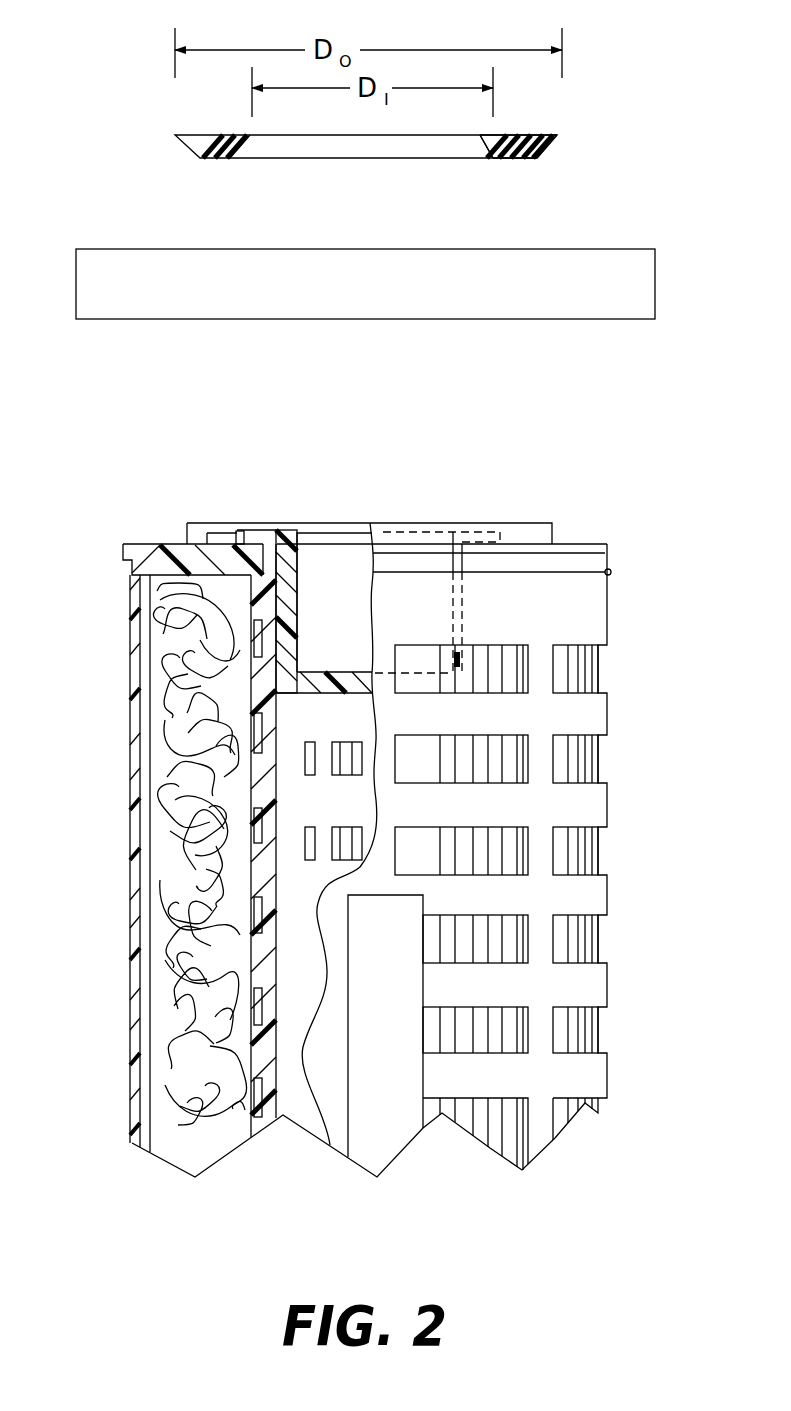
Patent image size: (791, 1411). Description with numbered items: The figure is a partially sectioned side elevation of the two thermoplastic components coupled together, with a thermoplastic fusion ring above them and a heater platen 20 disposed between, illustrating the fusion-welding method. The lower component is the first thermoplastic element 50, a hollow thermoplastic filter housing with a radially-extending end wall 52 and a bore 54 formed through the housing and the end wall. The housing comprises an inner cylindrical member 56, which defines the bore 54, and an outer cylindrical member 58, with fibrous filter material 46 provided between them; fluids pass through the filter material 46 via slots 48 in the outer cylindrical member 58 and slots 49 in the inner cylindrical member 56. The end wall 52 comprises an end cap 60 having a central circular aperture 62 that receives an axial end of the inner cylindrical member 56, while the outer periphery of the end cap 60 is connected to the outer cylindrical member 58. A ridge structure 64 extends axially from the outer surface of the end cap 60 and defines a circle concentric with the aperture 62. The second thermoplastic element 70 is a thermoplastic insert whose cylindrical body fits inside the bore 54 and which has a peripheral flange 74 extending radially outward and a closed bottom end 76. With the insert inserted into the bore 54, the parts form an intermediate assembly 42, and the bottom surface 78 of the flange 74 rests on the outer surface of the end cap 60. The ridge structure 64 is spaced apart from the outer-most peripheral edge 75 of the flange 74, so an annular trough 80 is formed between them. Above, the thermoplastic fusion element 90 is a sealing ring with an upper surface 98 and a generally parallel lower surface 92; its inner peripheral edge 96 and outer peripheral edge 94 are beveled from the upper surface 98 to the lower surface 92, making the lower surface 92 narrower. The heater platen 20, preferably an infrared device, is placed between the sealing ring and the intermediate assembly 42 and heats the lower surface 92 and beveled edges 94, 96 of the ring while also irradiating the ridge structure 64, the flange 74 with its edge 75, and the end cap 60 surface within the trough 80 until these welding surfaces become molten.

The heater platen 20 is at (660, 248).
The intermediate assembly 42 is at (627, 430).
The fibrous filter material 46 is at (182, 928).
The slots 48 is at (418, 773).
The slots 49 is at (343, 740).
The first thermoplastic element 50 is at (612, 543).
The end wall 52 is at (575, 541).
The bore 54 is at (250, 827).
The inner cylindrical member 56 is at (268, 880).
The outer cylindrical member 58 is at (132, 723).
The end cap 60 is at (123, 568).
The circular aperture 62 is at (273, 533).
The ridge structure 64 is at (197, 525).
The second thermoplastic element 70 is at (320, 522).
The peripheral flange 74 is at (482, 530).
The outer-most peripheral edge 75 is at (222, 538).
The closed bottom end 76 is at (343, 673).
The bottom surface 78 is at (170, 547).
The annular trough 80 is at (213, 537).
The thermoplastic fusion element 90 is at (553, 134).
The lower surface 92 is at (518, 158).
The outer peripheral edge 94 is at (550, 143).
The inner peripheral edge 96 is at (493, 158).
The upper surface 98 is at (520, 134).